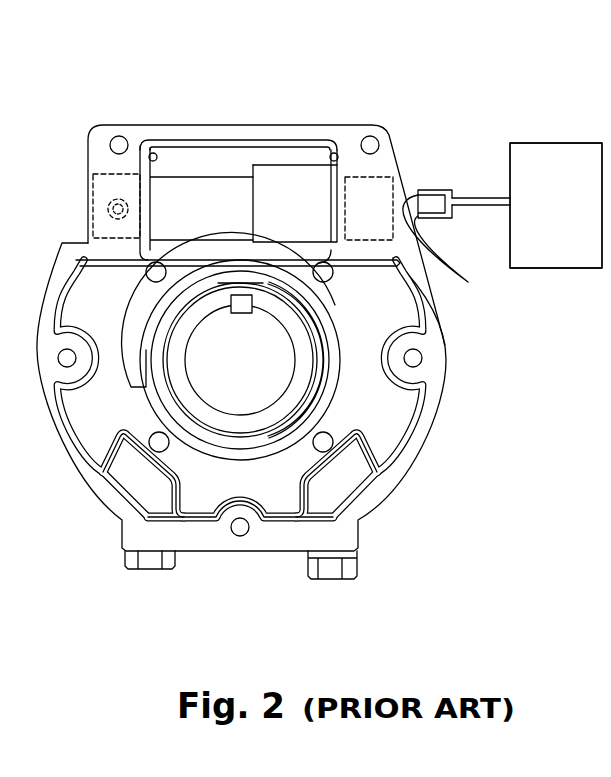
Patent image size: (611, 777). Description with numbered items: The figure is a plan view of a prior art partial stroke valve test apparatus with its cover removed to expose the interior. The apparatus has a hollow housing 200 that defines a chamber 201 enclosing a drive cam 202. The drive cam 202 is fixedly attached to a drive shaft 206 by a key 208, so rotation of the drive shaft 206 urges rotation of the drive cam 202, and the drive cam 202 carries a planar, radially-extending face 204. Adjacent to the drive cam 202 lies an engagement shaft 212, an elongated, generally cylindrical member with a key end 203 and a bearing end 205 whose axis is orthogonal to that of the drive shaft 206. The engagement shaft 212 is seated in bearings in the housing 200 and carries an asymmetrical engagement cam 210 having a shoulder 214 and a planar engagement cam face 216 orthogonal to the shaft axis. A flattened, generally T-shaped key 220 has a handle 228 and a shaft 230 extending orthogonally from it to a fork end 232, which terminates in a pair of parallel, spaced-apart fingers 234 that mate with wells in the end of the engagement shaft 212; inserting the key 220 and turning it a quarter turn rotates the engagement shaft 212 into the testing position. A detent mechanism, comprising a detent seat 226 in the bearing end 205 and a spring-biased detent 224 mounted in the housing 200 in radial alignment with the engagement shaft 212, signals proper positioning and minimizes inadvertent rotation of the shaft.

The housing 200 is at (205, 123).
The chamber 201 is at (391, 322).
The drive cam 202 is at (140, 355).
The key end 203 is at (372, 180).
The face 204 is at (218, 250).
The bearing end 205 is at (93, 185).
The drive shaft 206 is at (227, 372).
The key 208 is at (246, 297).
The engagement cam 210 is at (310, 212).
The engagement shaft 212 is at (170, 197).
The shoulder 214 is at (311, 166).
The engagement cam face 216 is at (253, 187).
The key 220 is at (553, 141).
The spring-biased detent 224 is at (108, 204).
The detent seat 226 is at (112, 212).
The handle 228 is at (535, 252).
The shaft 230 is at (483, 205).
The fork end 232 is at (446, 183).
The fingers 234 is at (448, 253).